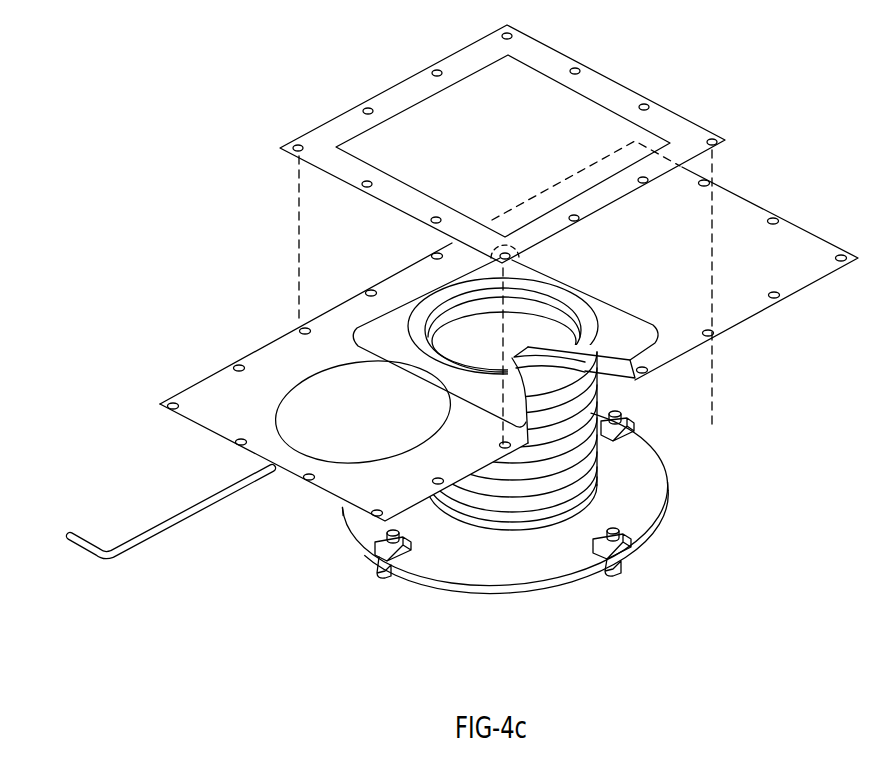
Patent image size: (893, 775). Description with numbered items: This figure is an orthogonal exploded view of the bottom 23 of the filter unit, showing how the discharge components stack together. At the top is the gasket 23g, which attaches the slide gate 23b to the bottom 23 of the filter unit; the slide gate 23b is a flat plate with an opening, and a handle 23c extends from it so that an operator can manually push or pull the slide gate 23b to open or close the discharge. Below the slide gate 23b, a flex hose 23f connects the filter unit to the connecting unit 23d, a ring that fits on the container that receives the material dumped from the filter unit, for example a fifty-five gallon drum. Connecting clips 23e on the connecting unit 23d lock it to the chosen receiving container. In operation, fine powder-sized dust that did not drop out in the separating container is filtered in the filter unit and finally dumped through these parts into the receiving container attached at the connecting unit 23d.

The bottom of filter unit 23 is at (446, 355).
The slide gate 23b is at (300, 478).
The handle 23c is at (97, 558).
The connecting unit 23d is at (668, 497).
The connecting clips 23e is at (633, 562).
The flex hose 23f is at (600, 400).
The gasket 23g is at (562, 53).